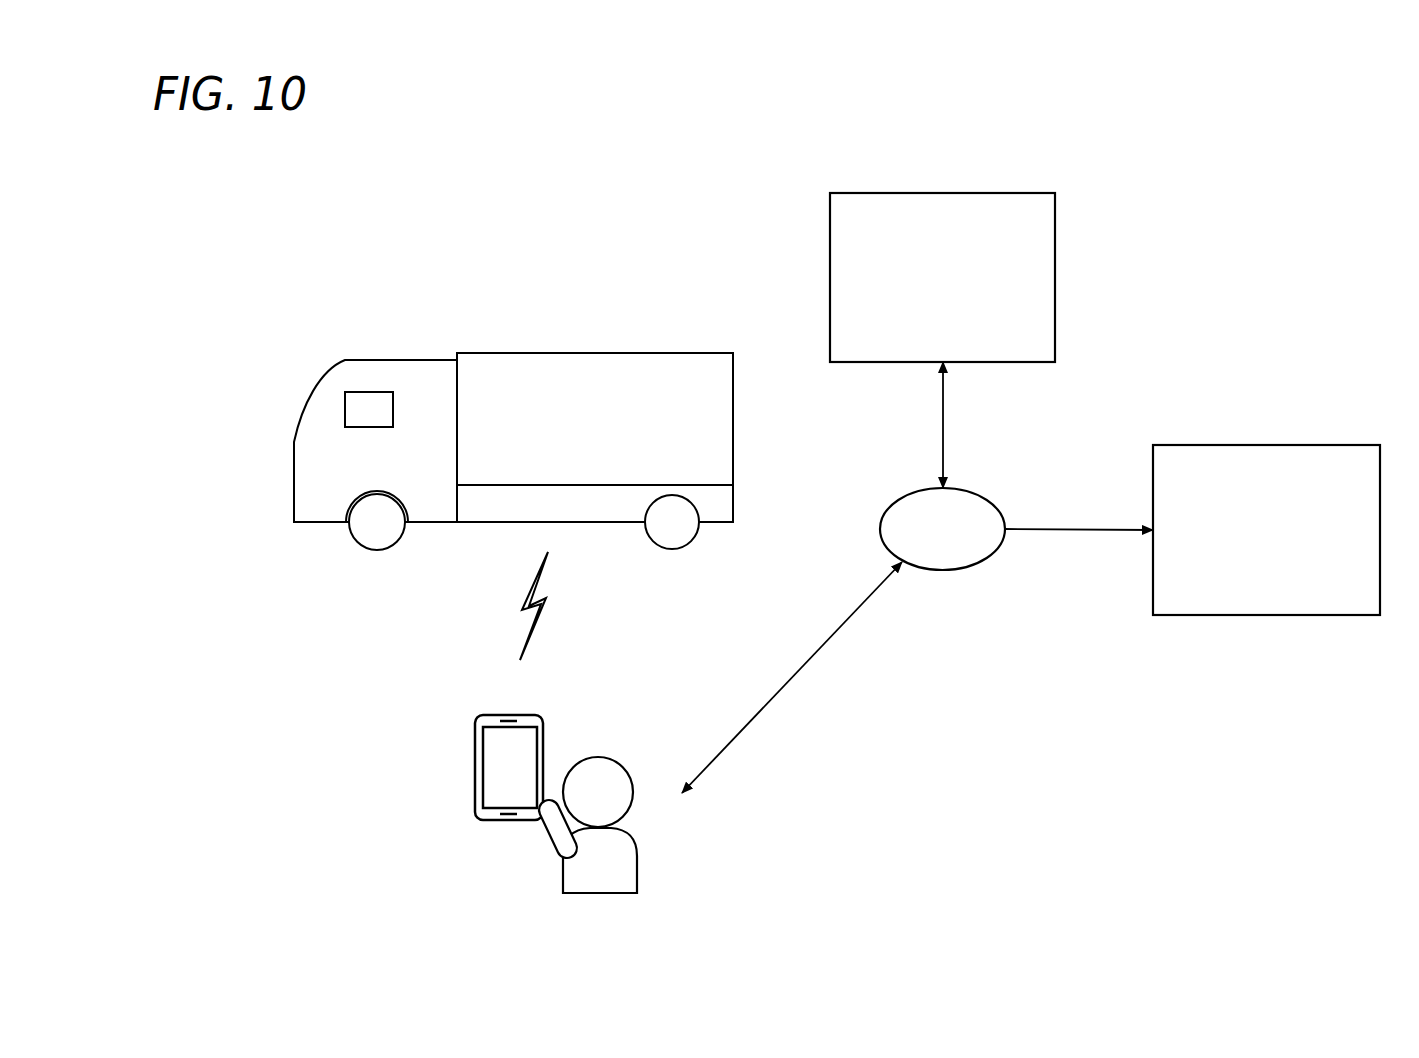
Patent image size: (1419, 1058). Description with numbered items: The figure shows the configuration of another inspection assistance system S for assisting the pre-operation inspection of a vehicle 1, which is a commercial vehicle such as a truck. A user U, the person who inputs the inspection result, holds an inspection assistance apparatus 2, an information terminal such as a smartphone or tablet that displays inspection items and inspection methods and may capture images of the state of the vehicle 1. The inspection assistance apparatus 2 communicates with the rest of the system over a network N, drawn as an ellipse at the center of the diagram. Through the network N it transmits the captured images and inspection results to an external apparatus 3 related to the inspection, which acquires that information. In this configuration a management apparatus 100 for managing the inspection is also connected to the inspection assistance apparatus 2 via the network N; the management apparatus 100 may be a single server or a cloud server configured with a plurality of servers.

The vehicle 1 is at (543, 312).
The inspection assistance apparatus 2 is at (535, 714).
The external apparatus 3 is at (1348, 443).
The management apparatus 100 is at (1025, 193).
The network N is at (985, 497).
The user U is at (615, 762).
The inspection assistance system S is at (1136, 140).